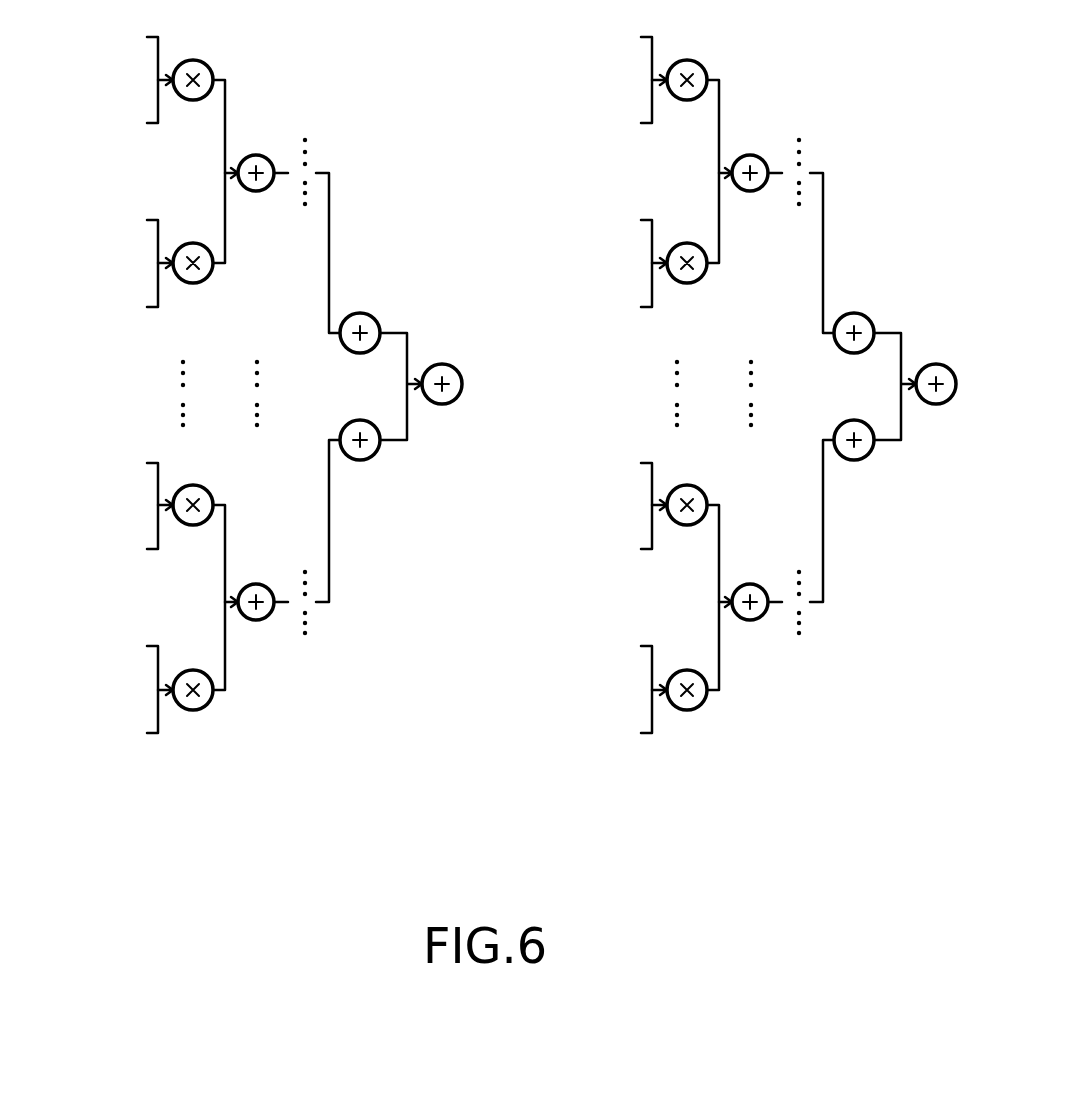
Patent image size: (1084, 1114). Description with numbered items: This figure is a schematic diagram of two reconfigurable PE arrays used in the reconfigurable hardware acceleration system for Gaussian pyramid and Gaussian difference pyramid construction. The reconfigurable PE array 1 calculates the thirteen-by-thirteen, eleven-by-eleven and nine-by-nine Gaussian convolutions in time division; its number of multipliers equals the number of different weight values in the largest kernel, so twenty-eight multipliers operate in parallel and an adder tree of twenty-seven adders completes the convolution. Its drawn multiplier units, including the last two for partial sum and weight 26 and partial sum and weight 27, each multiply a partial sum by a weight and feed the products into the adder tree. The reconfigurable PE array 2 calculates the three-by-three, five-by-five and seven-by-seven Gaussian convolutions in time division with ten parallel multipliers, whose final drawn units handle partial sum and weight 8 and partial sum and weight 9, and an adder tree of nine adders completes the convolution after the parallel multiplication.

The reconfigurable PE array 1 is at (255, 431).
The reconfigurable PE array 2 is at (749, 431).
The multiplier unit for PSUM26 and W26 26 is at (127, 505).
The multiplier unit for PSUM27 and W27 27 is at (127, 689).
The multiplier unit for PSUM8 and W8 8 is at (624, 505).
The multiplier unit for PSUM9 and W9 9 is at (624, 689).